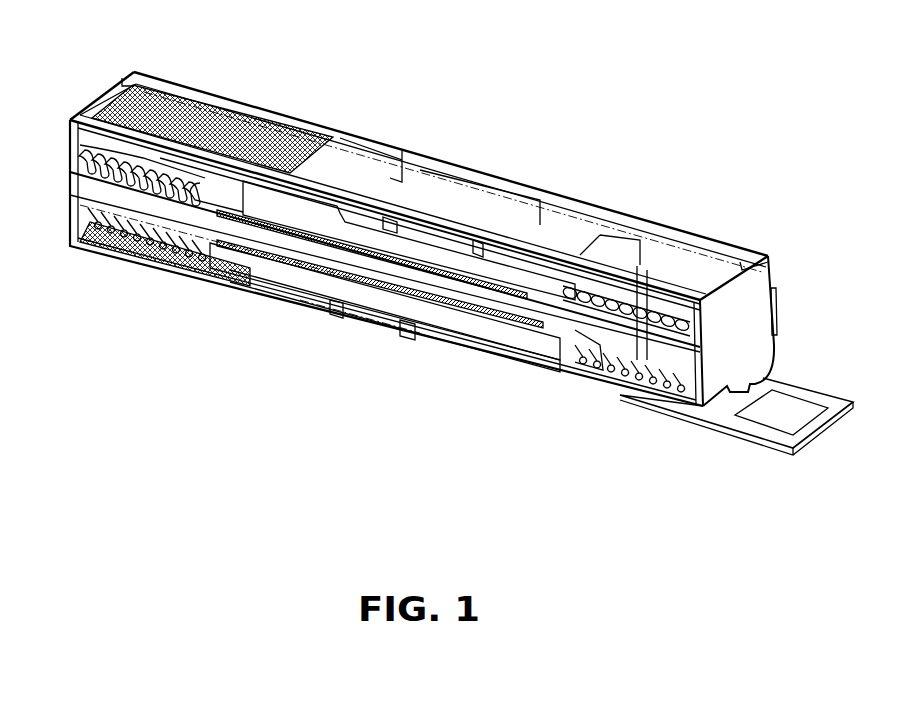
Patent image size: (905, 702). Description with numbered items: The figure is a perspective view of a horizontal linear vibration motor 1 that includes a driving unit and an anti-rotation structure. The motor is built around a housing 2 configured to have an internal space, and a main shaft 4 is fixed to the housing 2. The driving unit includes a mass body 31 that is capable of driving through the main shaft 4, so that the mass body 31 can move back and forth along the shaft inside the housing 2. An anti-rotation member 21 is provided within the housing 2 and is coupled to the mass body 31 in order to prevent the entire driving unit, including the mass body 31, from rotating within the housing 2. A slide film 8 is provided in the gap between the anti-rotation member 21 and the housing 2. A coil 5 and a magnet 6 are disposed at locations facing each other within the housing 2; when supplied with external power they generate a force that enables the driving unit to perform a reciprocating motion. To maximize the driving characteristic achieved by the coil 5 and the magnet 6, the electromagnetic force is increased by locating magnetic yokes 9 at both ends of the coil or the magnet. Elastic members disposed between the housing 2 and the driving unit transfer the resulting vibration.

The horizontal linear vibration motor 1 is at (567, 155).
The housing 2 is at (700, 242).
The main shaft 4 is at (643, 345).
The coil 5 is at (502, 357).
The magnet 6 is at (468, 268).
The slide film 8 is at (167, 103).
The magnetic yokes 9 is at (430, 185).
The anti-rotation member 21 is at (100, 142).
The mass body 31 is at (323, 292).